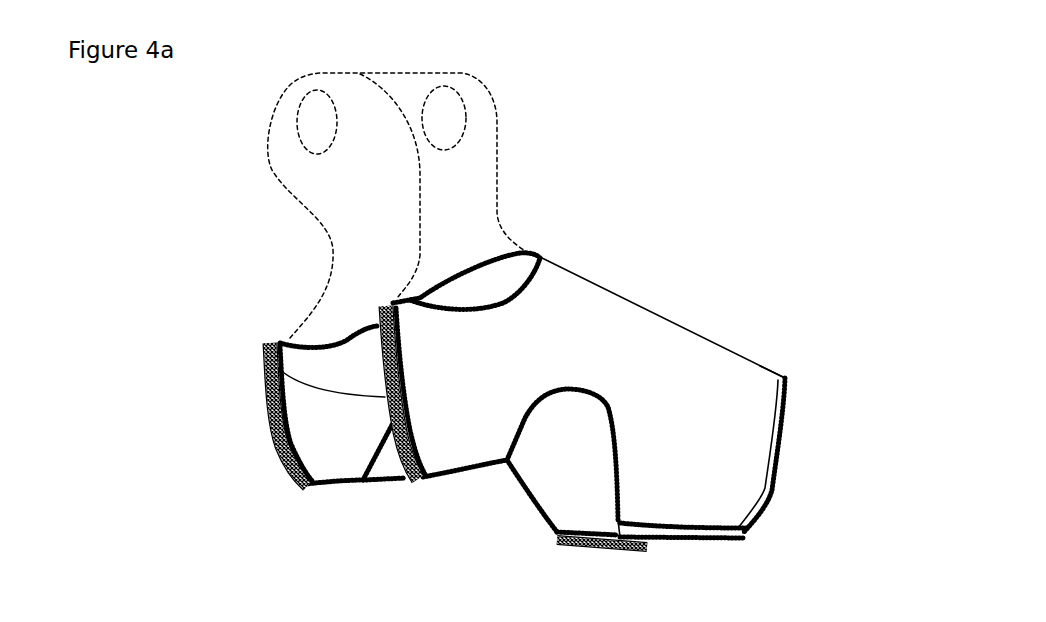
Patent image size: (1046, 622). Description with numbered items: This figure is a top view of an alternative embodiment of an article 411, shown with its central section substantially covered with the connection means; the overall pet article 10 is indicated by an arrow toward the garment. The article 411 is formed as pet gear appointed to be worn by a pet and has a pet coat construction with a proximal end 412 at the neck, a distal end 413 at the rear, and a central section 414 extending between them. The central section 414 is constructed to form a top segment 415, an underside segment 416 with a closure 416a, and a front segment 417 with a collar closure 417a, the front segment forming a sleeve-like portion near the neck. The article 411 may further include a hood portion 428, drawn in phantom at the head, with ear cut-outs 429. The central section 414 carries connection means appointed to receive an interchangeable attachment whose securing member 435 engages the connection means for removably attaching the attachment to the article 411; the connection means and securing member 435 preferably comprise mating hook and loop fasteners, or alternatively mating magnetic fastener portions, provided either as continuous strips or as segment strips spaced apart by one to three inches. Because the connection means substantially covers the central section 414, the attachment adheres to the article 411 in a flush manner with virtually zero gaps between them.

The animal 10 is at (170, 172).
The article 411 is at (592, 359).
The proximal end 412 is at (542, 258).
The distal end 413 is at (785, 378).
The central section 414 is at (640, 348).
The top segment 415 is at (602, 283).
The underside segment 416 is at (733, 484).
The closure 416a is at (558, 542).
The front segment 417 is at (293, 407).
The collar closure 417a is at (270, 432).
The hood portion 428 is at (468, 83).
The ear cut-outs 429 is at (302, 145).
The securing member 435 is at (263, 343).